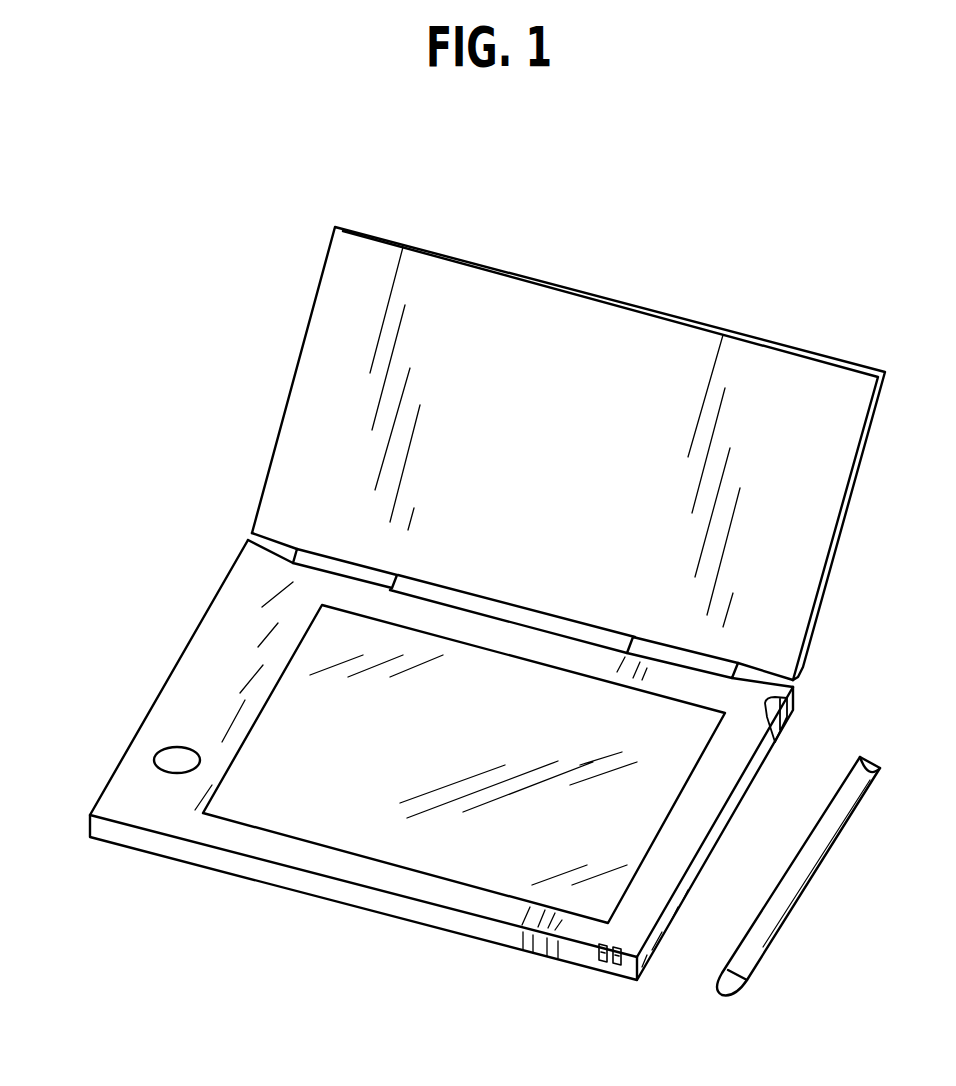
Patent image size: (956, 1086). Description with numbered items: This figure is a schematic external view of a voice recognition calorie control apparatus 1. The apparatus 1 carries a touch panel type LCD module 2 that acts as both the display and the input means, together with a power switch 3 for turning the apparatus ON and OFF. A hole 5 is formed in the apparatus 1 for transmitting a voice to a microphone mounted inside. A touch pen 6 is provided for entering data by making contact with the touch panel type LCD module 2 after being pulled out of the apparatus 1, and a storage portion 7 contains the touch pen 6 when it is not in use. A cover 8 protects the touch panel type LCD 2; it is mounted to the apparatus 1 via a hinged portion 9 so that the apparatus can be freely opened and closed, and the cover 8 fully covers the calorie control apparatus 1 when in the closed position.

The calorie control apparatus 1 is at (207, 582).
The touch panel type LCD module 2 is at (318, 817).
The power switch 3 is at (177, 767).
The hole 5 is at (600, 955).
The touch pen 6 is at (800, 877).
The storage portion 7 is at (780, 718).
The cover 8 is at (570, 312).
The hinged portion 9 is at (668, 647).